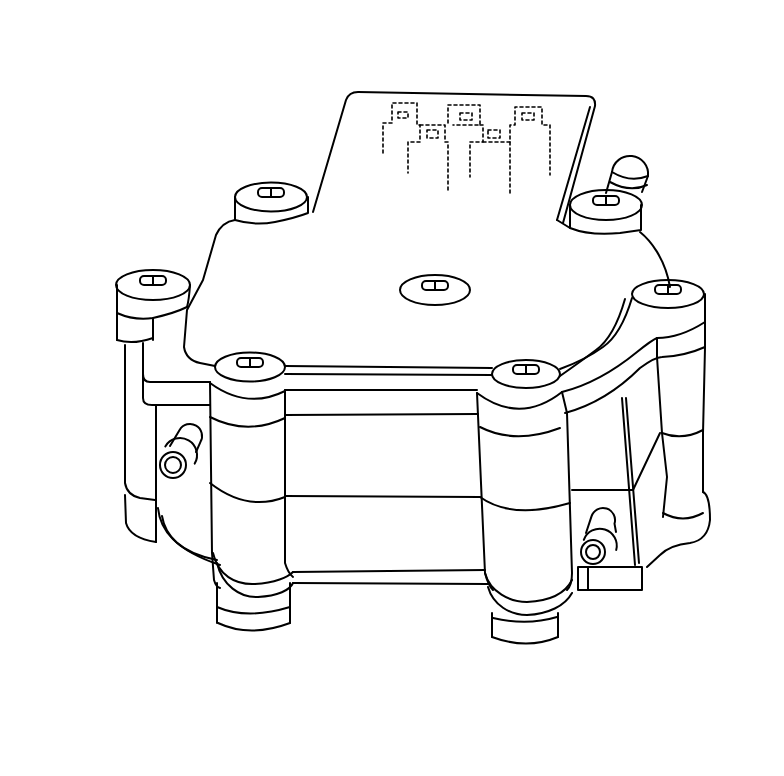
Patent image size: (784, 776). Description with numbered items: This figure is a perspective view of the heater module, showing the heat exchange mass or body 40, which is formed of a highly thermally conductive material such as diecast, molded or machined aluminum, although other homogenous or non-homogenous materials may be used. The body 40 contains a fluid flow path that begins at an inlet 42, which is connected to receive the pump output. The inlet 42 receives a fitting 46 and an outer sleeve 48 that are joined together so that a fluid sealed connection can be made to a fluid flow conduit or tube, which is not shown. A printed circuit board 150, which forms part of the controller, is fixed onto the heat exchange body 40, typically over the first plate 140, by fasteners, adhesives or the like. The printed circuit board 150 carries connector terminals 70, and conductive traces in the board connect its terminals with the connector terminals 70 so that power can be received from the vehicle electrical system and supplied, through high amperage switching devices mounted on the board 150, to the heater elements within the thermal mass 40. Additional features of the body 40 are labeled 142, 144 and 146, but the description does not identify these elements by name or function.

The heat exchange mass 40 is at (108, 398).
The inlet 42 is at (146, 461).
The fitting 46 is at (181, 432).
The outer sleeve 48 is at (180, 474).
The connector terminals 70 is at (549, 105).
The first plate 140 is at (117, 333).
The flange tab 142 is at (158, 508).
The mounting boss 144 is at (248, 195).
The foot 146 is at (270, 624).
The printed circuit board 150 is at (237, 260).